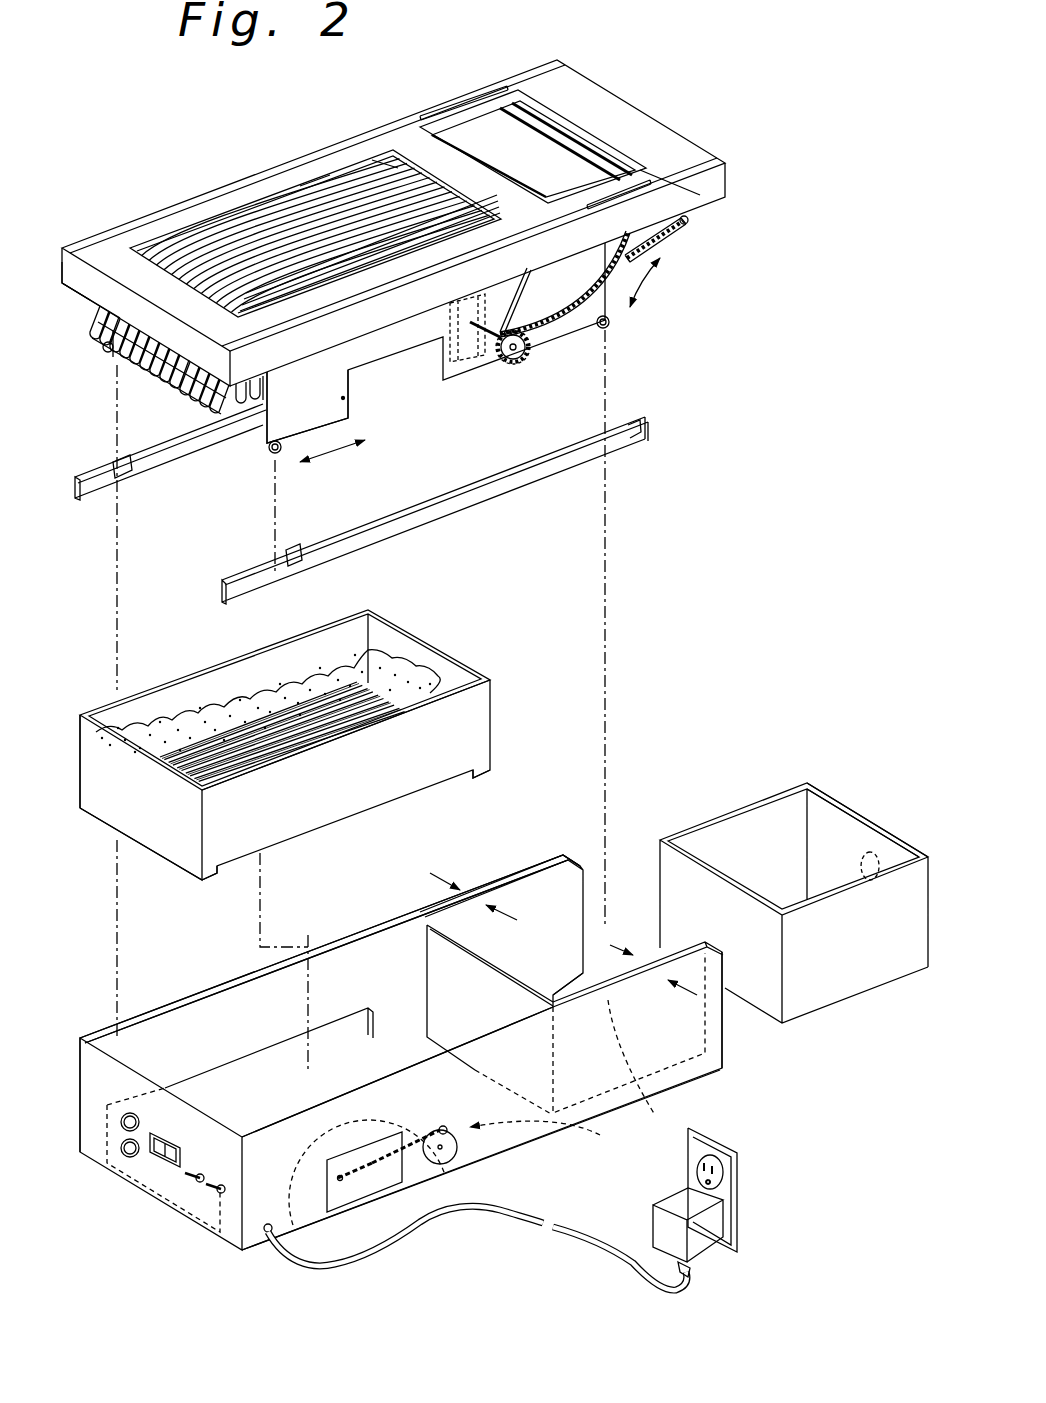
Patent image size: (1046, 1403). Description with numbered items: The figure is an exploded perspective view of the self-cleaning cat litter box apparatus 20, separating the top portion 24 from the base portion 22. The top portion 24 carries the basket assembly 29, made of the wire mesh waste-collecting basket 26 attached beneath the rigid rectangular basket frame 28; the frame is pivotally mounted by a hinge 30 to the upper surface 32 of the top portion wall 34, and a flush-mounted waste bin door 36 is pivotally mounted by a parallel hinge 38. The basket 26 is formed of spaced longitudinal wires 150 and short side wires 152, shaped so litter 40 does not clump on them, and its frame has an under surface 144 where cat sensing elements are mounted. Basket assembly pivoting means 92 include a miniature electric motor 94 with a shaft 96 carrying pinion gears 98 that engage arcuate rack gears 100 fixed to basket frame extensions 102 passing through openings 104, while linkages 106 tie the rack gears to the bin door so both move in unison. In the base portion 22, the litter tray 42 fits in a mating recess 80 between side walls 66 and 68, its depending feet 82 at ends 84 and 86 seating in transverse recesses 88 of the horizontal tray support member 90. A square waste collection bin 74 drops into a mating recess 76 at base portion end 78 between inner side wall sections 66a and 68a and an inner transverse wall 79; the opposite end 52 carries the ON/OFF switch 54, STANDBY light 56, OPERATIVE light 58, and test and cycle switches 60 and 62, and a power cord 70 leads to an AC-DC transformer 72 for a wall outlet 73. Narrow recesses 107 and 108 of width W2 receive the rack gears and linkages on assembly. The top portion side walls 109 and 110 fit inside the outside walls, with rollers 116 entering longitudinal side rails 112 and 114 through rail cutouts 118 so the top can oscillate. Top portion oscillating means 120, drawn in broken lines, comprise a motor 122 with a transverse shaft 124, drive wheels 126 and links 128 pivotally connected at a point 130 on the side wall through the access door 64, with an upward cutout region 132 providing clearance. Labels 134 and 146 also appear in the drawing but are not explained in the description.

The apparatus 20 is at (670, 510).
The base portion 22 is at (72, 1125).
The top portion 24 is at (754, 162).
The waste-collecting basket 26 is at (216, 228).
The basket frame 28 is at (402, 128).
The basket assembly 29 is at (110, 226).
The hinge 30 is at (526, 195).
The upper surface 32 is at (682, 170).
The top portion wall 34 is at (78, 288).
The waste bin door 36 is at (552, 140).
The hinge 38 is at (606, 152).
The litter 40 is at (418, 672).
The cat litter tray 42 is at (78, 762).
The end 52 is at (85, 1063).
The system ON/OFF switch 54 is at (160, 1168).
The STANDBY status light 56 is at (125, 1130).
The OPERATIVE status light 58 is at (128, 1156).
The test switch 60 is at (195, 1182).
The cycle switch 62 is at (218, 1194).
The access door 64 is at (342, 1210).
The outside wall 66 is at (522, 1133).
The inner side wall section 66a is at (628, 978).
The outside wall 68 is at (216, 985).
The inner side wall section 68a is at (540, 905).
The electric power cord 70 is at (396, 1256).
The AC-DC transformer 72 is at (665, 1192).
The wall outlet 73 is at (738, 1190).
The waste collection bin 74 is at (745, 778).
The mating recess 76 is at (587, 925).
The base portion end 78 is at (724, 1068).
The inner transverse wall 79 is at (512, 990).
The mating recess 80 is at (333, 1000).
The depending feet 82 is at (480, 778).
The end 84 is at (156, 830).
The end 86 is at (493, 700).
The transverse recesses 88 is at (378, 1042).
The horizontal tray support member 90 is at (210, 1100).
The basket assembly pivoting means 92 is at (674, 305).
The electric motor 94 is at (462, 362).
The shaft 96 is at (495, 358).
The pinion gears 98 is at (526, 362).
The arcuate rack gears 100 is at (556, 332).
The basket frame extensions 102 is at (466, 97).
The openings 104 is at (720, 290).
The linkages 106 is at (678, 233).
The narrow recess 107 is at (643, 1066).
The narrow recess 108 is at (572, 855).
The side wall 109 is at (341, 466).
The side wall 110 is at (130, 358).
The side rail 112 is at (222, 582).
The side rail 114 is at (98, 498).
The rollers 116 is at (612, 327).
The rail cutouts 118 is at (630, 428).
The top portion oscillating means 120 is at (546, 1143).
The electric motor 122 is at (290, 1222).
The transverse shaft 124 is at (454, 1162).
The drive wheels 126 is at (458, 1147).
The links 128 is at (372, 1182).
The point 130 is at (345, 398).
The upward cutout region 132 is at (470, 335).
The box rim 134 is at (850, 800).
The under surface 144 is at (340, 797).
The granular material 146 is at (160, 692).
The longitudinal wires 150 is at (400, 198).
The side wires 152 is at (318, 200).
The width W2 is at (563, 919).